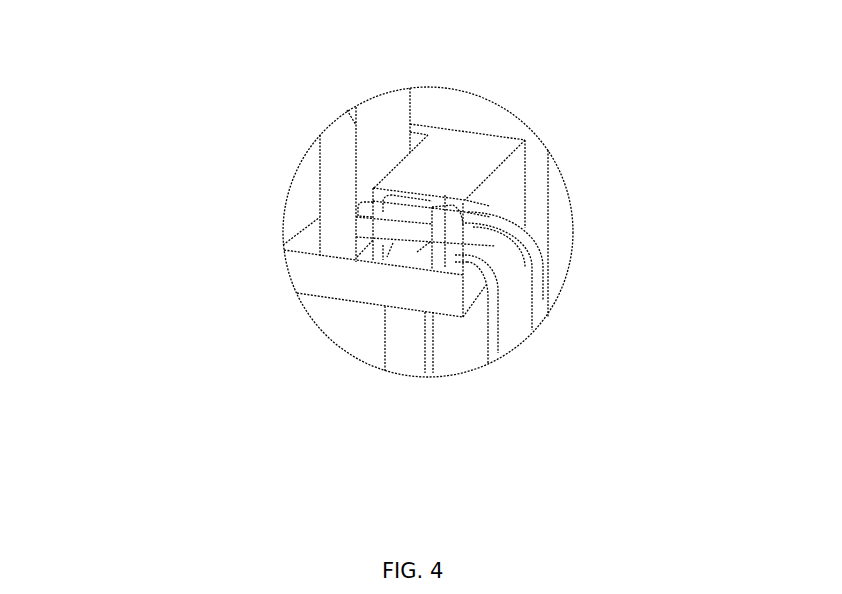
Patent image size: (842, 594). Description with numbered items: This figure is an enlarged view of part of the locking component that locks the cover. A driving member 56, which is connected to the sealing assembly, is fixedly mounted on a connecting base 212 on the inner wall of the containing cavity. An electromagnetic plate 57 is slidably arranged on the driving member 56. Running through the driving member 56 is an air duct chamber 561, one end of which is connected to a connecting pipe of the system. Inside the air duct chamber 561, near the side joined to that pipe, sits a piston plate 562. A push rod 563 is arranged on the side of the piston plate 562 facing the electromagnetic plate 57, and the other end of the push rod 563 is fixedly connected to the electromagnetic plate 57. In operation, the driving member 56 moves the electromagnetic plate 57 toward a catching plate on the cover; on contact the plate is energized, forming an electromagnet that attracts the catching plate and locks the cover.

The connecting base 212 is at (310, 273).
The driving member 56 is at (483, 187).
The air duct chamber 561 is at (403, 253).
The piston plate 562 is at (425, 234).
The push rod 563 is at (417, 220).
The electromagnetic plate 57 is at (342, 180).